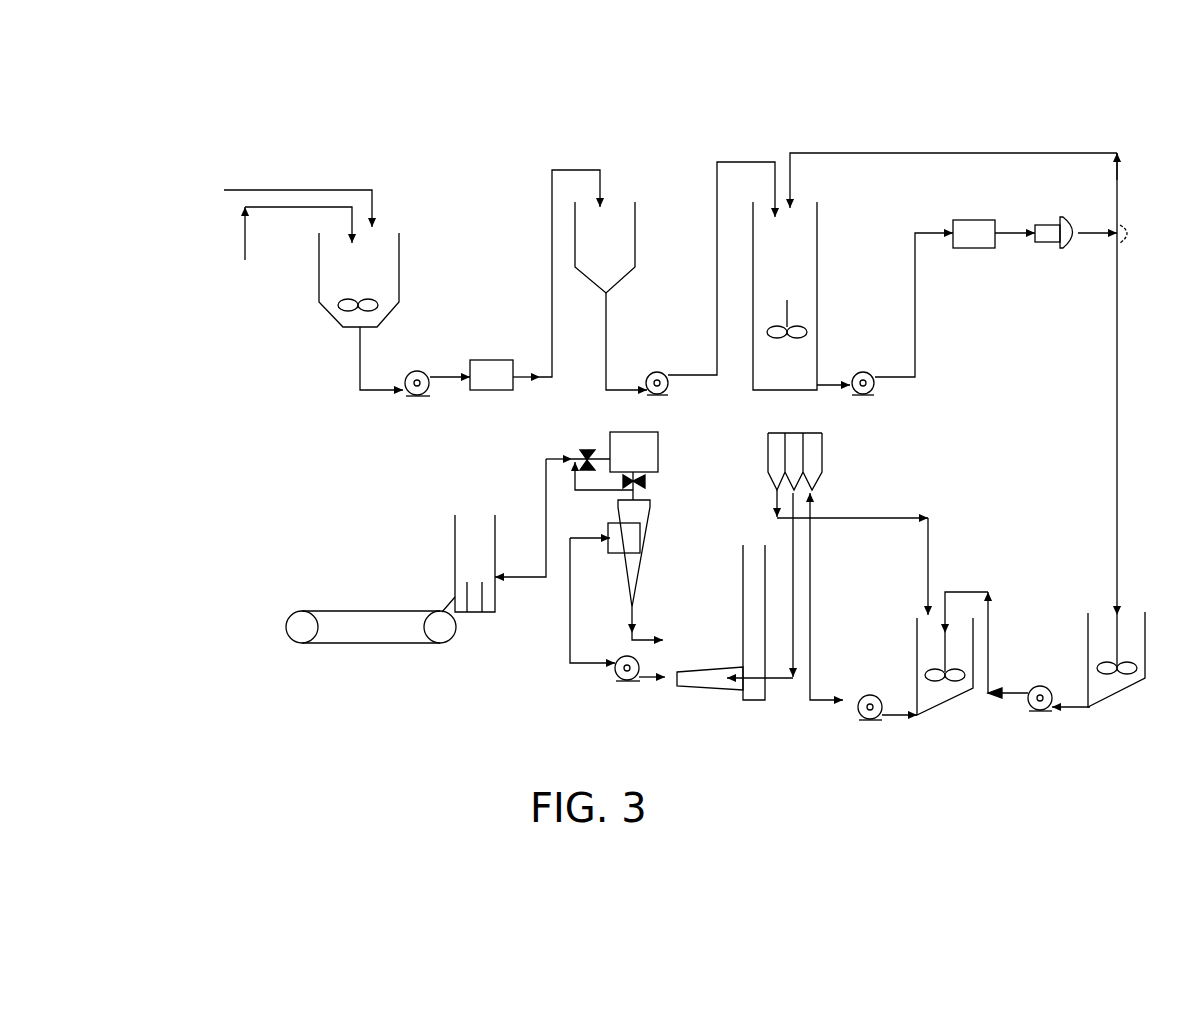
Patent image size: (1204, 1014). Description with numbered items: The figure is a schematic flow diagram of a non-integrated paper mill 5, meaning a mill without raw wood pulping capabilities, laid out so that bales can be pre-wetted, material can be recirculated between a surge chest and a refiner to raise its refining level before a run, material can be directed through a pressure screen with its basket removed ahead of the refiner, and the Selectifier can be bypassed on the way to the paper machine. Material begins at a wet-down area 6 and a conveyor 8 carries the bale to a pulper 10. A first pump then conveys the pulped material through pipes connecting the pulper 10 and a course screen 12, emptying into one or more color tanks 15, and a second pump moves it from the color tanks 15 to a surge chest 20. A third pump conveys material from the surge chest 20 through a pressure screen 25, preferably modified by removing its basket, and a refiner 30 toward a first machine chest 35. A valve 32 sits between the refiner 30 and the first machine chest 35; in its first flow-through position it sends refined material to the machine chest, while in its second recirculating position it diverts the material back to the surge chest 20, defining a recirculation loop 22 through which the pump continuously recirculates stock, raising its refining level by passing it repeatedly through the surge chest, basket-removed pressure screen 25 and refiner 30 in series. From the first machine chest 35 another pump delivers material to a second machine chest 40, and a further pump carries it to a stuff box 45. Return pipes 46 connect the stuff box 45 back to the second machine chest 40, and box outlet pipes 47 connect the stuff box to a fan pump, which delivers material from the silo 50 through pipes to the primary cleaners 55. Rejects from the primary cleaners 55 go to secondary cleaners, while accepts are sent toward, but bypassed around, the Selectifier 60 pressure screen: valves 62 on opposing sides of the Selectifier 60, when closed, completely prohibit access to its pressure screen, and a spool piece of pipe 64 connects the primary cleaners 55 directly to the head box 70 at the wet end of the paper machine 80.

The non-integrated paper mill 5 is at (650, 73).
The wet-down area 6 is at (217, 300).
The conveyor 8 is at (287, 168).
The pulper 10 is at (398, 278).
The course screen 12 is at (503, 362).
The color tank 15 is at (633, 212).
The surge chest 20 is at (800, 372).
The recirculation loop 22 is at (1118, 192).
The pressure screen 25 is at (975, 237).
The refiner 30 is at (1053, 222).
The valve 32 is at (1132, 238).
The first machine chest 35 is at (1145, 680).
The second machine chest 40 is at (917, 632).
The stuff box 45 is at (815, 460).
The return pipes 46 is at (855, 520).
The box outlet pipes 47 is at (793, 553).
The silo 50 is at (738, 548).
The primary cleaners 55 is at (636, 550).
The Selectifier 60 is at (650, 462).
The valves 62 is at (595, 453).
The spool piece of pipe 64 is at (560, 487).
The head box 70 is at (484, 540).
The paper machine 80 is at (287, 587).